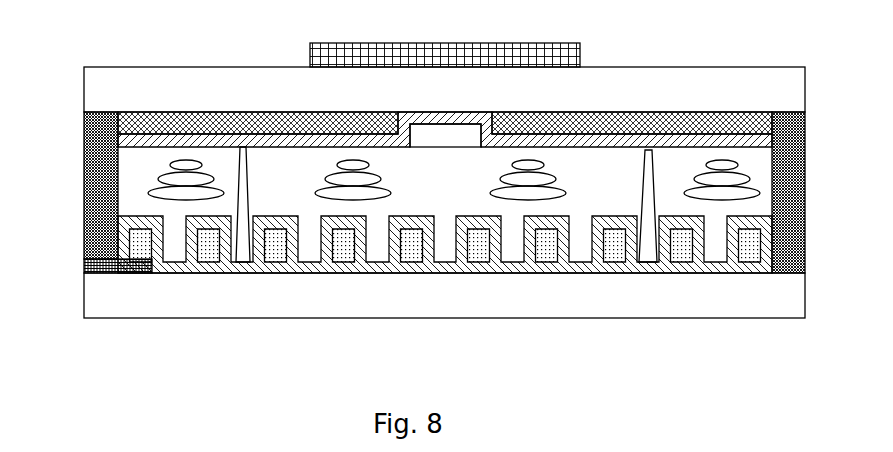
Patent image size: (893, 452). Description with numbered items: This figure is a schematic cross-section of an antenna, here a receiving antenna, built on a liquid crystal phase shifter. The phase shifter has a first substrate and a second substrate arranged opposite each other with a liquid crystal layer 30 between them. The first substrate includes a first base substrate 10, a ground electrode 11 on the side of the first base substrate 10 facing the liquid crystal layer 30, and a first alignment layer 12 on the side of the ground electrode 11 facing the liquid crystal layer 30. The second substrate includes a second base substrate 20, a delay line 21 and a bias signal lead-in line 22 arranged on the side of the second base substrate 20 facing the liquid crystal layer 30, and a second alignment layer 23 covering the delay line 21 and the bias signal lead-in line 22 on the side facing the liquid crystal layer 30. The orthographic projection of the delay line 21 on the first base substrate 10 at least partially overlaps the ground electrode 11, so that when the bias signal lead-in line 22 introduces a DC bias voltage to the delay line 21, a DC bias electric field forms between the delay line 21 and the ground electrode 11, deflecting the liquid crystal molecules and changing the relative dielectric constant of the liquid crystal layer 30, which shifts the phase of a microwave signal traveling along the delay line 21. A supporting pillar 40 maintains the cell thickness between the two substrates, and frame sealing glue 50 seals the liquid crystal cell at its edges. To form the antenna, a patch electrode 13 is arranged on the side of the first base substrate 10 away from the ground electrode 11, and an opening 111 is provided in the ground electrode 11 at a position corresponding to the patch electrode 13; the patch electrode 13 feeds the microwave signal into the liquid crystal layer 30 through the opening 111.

The first base substrate 10 is at (117, 83).
The ground electrode 11 is at (138, 125).
The first alignment layer 12 is at (118, 146).
The patch electrode 13 is at (512, 43).
The opening 111 is at (492, 124).
The second base substrate 20 is at (760, 303).
The delay line 21 is at (745, 258).
The bias signal lead-in line 22 is at (108, 268).
The second alignment layer 23 is at (745, 223).
The liquid crystal layer 30 is at (144, 174).
The supporting pillar 40 is at (647, 255).
The frame sealing glue 50 is at (785, 183).